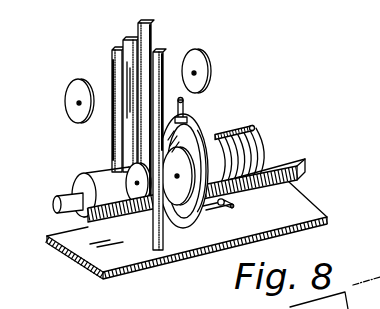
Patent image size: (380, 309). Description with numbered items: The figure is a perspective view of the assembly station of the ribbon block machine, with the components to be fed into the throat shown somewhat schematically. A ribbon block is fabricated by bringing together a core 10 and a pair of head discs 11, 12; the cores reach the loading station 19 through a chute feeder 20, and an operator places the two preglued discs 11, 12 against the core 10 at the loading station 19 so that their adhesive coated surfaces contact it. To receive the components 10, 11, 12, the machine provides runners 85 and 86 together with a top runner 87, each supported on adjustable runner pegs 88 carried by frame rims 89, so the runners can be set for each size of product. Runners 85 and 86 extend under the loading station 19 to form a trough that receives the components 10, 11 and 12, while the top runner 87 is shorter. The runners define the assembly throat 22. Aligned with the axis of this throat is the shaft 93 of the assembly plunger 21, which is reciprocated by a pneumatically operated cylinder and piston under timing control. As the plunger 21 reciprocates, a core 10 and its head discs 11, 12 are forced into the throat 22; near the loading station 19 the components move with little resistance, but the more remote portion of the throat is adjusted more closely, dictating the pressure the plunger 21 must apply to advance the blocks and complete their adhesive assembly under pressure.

The core 10 is at (118, 156).
The head disc 11 is at (68, 88).
The head disc 12 is at (210, 51).
The loading station 19 is at (143, 218).
The chute feeder 20 is at (114, 76).
The assembly plunger 21 is at (75, 184).
The assembly throat 22 is at (212, 130).
The runner 85 is at (297, 176).
The runner 86 is at (272, 160).
The top runner 87 is at (254, 127).
The adjustable runner pegs 88 is at (187, 228).
The frame rims 89 is at (225, 196).
The shaft 93 is at (57, 204).